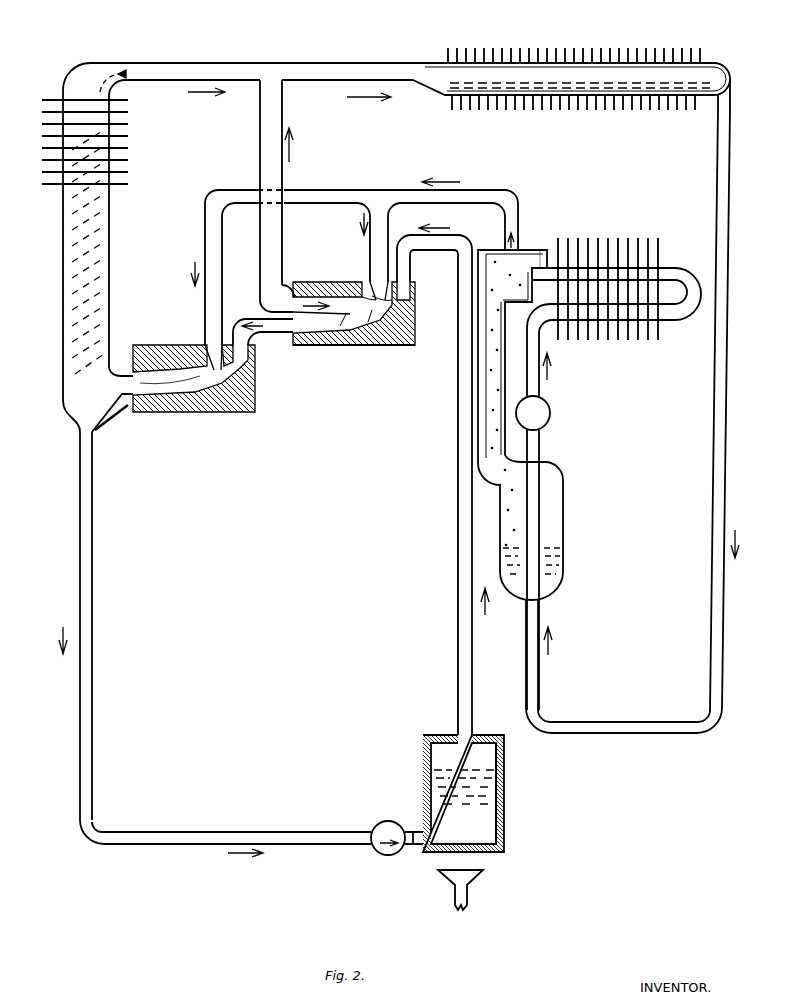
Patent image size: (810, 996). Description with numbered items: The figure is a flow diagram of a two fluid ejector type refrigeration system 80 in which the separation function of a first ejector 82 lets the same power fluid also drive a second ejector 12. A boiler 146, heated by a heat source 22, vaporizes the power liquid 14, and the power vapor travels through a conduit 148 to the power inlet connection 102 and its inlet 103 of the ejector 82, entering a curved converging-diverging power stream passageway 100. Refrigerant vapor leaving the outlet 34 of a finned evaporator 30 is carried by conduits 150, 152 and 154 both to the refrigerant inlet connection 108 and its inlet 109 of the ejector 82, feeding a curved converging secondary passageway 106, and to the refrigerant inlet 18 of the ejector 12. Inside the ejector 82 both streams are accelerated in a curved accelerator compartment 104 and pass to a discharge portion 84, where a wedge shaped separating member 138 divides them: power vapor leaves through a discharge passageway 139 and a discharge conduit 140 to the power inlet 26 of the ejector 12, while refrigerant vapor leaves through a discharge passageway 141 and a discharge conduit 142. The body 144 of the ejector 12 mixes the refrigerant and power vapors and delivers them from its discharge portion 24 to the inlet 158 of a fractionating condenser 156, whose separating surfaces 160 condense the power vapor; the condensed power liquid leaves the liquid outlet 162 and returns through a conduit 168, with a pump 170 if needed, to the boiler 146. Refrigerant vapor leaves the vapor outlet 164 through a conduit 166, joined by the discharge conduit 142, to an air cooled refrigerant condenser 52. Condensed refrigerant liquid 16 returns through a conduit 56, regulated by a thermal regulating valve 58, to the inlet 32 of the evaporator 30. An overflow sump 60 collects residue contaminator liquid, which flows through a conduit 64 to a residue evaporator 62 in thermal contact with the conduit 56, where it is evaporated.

The fractionating condenser 156 is at (68, 90).
The separating surfaces 160 is at (112, 158).
The vapor outlet 164 is at (128, 68).
The liquid outlet 162 is at (66, 425).
The conduit 166 is at (296, 63).
The discharge conduit 142 is at (259, 251).
The conduit 154 is at (204, 222).
The conduit 152 is at (392, 222).
The conduit 150 is at (508, 203).
The refrigerant condenser 52 is at (458, 52).
The refrigerant liquid 16 is at (712, 66).
The conduit 56 is at (724, 465).
The conduit 64 is at (504, 362).
The outlet 34 is at (534, 250).
The overflow sump 60 is at (528, 304).
The residue evaporator 62 is at (563, 482).
The evaporator 30 is at (572, 240).
The inlet 32 is at (546, 330).
The thermal regulating valve 58 is at (550, 405).
The first ejector 82 is at (369, 332).
The discharge portion 84 is at (328, 283).
The discharge passageway 141 is at (300, 290).
The curved converging-diverging power stream passageway 100 is at (448, 308).
The curved accelerator compartment 104 is at (432, 362).
The refrigerant inlet connection 108 is at (378, 280).
The inlet 109 is at (380, 292).
The curved converging secondary passageway 106 is at (372, 293).
The power inlet connection 102 is at (402, 284).
The inlet 103 is at (408, 287).
The wedge shaped separating member 138 is at (345, 330).
The discharge passageway 139 is at (371, 327).
The discharge conduit 140 is at (280, 335).
The power inlet 26 is at (250, 344).
The ejector 12 is at (197, 567).
The ejector body 144 is at (258, 372).
The refrigerant inlet 18 is at (208, 338).
The inlet 158 is at (112, 368).
The discharge portion 24 is at (116, 418).
The conduit 168 is at (93, 618).
The two fluid ejector type refrigeration system 80 is at (292, 578).
The vapor conduit from boiler 148 is at (473, 668).
The boiler 146 is at (500, 794).
The power liquid 14 is at (480, 776).
The pump 170 is at (378, 852).
The heat source 22 is at (484, 876).